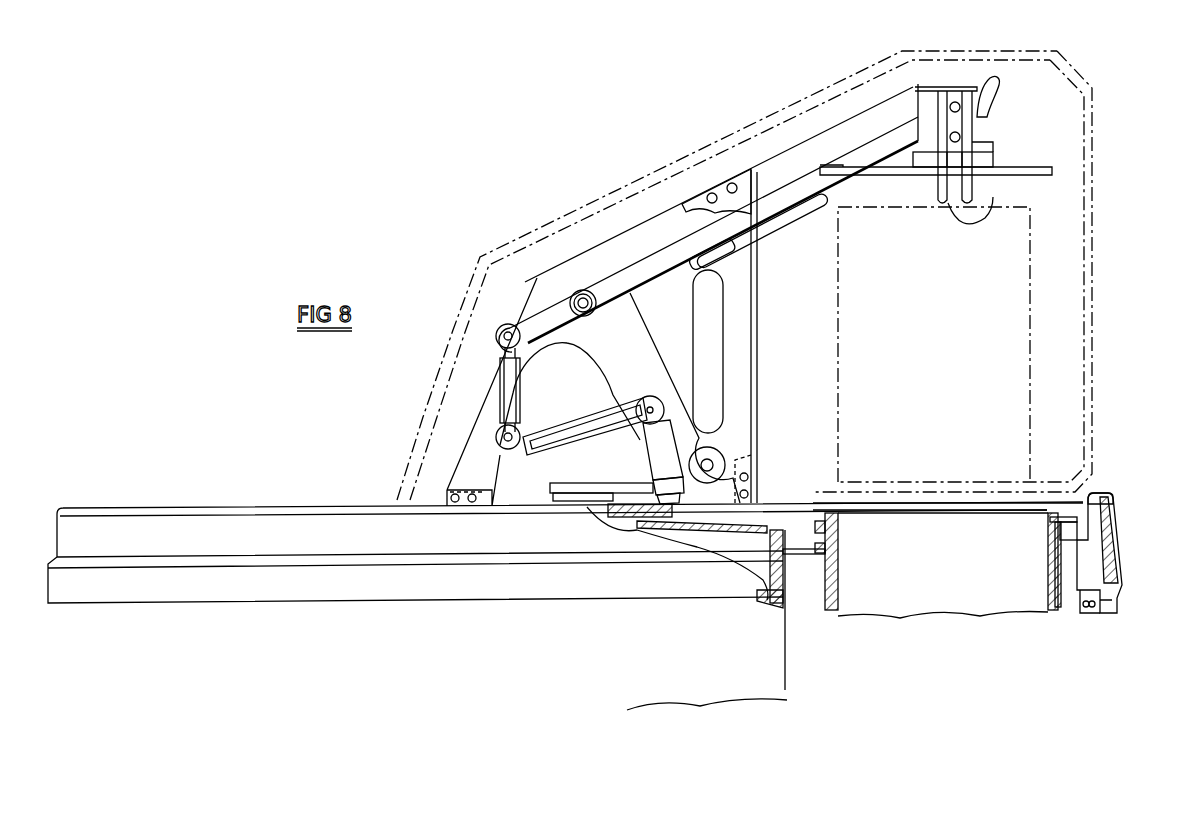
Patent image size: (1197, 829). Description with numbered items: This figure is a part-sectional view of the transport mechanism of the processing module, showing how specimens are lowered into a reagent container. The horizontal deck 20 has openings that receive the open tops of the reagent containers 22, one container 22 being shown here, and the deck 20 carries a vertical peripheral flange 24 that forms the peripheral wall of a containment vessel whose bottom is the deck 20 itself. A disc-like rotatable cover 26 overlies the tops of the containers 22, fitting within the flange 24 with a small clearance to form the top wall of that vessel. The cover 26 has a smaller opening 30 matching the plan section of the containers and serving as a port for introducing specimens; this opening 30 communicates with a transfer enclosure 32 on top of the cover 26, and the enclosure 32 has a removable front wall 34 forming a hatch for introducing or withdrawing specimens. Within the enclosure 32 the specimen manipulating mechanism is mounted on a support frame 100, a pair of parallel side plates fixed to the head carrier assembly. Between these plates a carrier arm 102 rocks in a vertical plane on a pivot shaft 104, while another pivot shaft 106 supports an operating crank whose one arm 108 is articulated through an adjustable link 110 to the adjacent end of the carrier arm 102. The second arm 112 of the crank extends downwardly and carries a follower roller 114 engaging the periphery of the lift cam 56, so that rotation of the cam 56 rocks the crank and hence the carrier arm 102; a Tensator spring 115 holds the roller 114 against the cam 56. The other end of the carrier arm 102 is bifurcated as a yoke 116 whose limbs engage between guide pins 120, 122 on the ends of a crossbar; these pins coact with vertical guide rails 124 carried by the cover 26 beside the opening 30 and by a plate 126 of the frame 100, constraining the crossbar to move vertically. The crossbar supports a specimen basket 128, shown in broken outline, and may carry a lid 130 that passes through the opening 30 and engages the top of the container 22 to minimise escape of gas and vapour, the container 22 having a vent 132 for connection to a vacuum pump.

The horizontal deck 20 is at (805, 560).
The reagent container 22 is at (957, 565).
The vertical peripheral flange 24 is at (1120, 523).
The cover 26 is at (777, 492).
The opening 30 is at (830, 486).
The transfer enclosure 32 is at (639, 185).
The removable front wall 34 is at (1092, 275).
The lift cam 56 is at (586, 486).
The support frame 100 is at (550, 280).
The carrier arm 102 is at (620, 273).
The pivot shaft 104 is at (580, 290).
The pivot shaft 106 is at (647, 405).
The crank arm 108 is at (560, 415).
The adjustable link 110 is at (507, 397).
The second crank arm 112 is at (660, 442).
The follower roller 114 is at (693, 545).
The Tensator spring 115 is at (757, 430).
The yoke 116 is at (800, 205).
The guide pin 120 is at (948, 107).
The guide pin 122 is at (962, 137).
The vertical guide rail 124 is at (975, 193).
The plate 126 is at (850, 117).
The specimen basket 128 is at (838, 312).
The lid 130 is at (1027, 166).
The vent 132 is at (1098, 500).